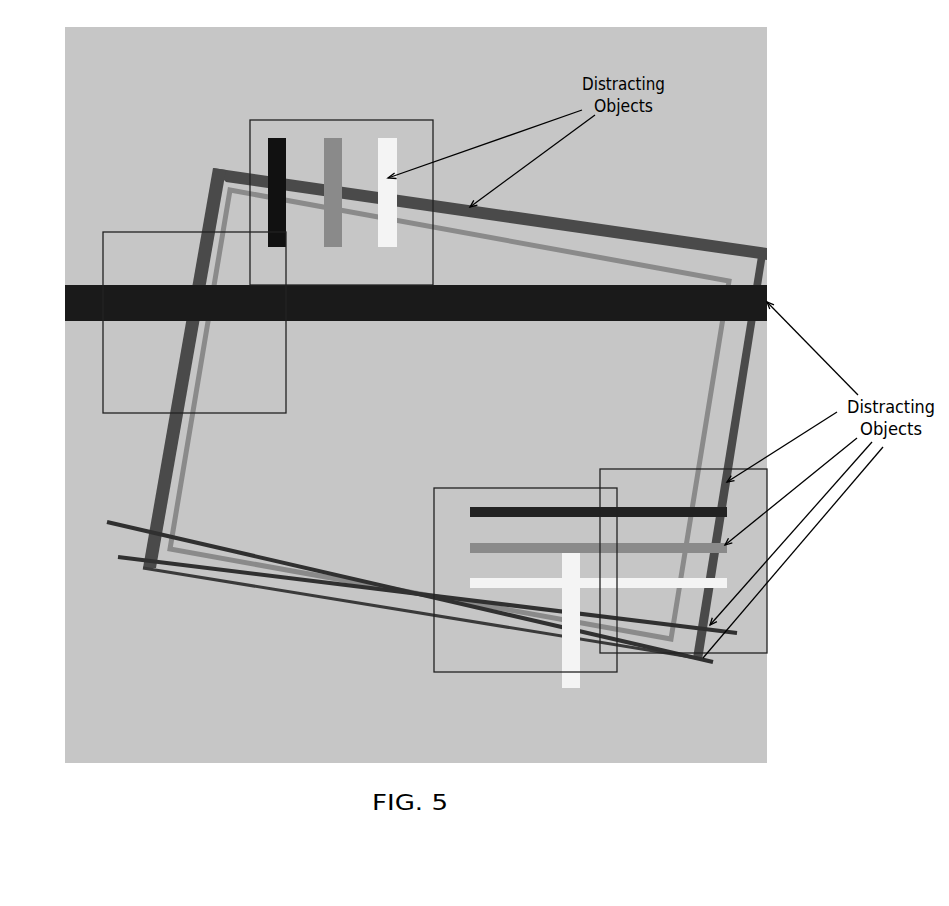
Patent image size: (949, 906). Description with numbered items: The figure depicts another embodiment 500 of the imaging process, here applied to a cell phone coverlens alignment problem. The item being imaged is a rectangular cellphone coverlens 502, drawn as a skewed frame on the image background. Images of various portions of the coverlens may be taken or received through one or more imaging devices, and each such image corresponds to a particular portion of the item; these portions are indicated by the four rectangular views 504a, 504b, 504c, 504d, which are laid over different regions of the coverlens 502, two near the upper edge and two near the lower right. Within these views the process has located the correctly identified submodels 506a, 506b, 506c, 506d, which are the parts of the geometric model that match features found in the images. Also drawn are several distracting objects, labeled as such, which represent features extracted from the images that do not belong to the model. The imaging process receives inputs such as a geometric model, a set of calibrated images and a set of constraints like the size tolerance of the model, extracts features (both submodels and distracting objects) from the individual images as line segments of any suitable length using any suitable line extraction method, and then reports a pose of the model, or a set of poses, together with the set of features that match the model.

The embodiment of imaging process 500 is at (806, 52).
The rectangular cellphone coverlens 502 is at (684, 258).
The view 504a is at (434, 124).
The view 504b is at (103, 232).
The view 504c is at (434, 545).
The view 504d is at (601, 469).
The correctly identified submodel 506a is at (217, 240).
The correctly identified submodel 506b is at (258, 192).
The correctly identified submodel 506c is at (592, 623).
The correctly identified submodel 506d is at (681, 625).